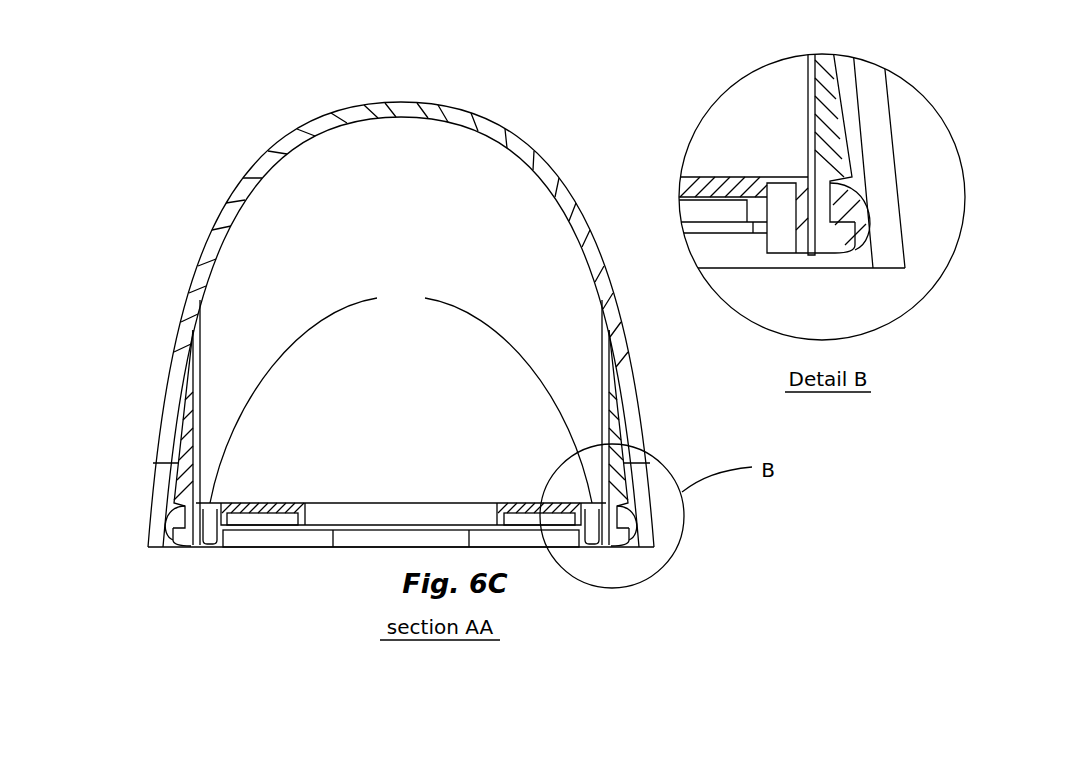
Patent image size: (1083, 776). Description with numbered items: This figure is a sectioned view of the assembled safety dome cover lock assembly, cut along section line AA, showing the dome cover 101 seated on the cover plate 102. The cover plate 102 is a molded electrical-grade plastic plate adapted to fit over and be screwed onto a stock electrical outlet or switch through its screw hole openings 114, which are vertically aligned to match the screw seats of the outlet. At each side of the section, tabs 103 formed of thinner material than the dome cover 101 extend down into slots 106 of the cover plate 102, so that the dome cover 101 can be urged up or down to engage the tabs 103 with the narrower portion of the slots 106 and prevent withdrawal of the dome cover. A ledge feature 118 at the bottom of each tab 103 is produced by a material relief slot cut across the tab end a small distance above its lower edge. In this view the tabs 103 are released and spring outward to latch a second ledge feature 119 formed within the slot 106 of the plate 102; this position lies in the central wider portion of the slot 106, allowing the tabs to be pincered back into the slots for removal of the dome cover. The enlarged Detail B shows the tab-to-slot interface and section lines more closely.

The dome cover 101 is at (400, 100).
The cover plate 102 is at (279, 503).
The tabs 103 is at (183, 443).
The slots 106 is at (795, 220).
The screw hole openings 114 is at (400, 490).
The ledge feature 118 is at (172, 541).
The second ledge feature 119 is at (167, 522).